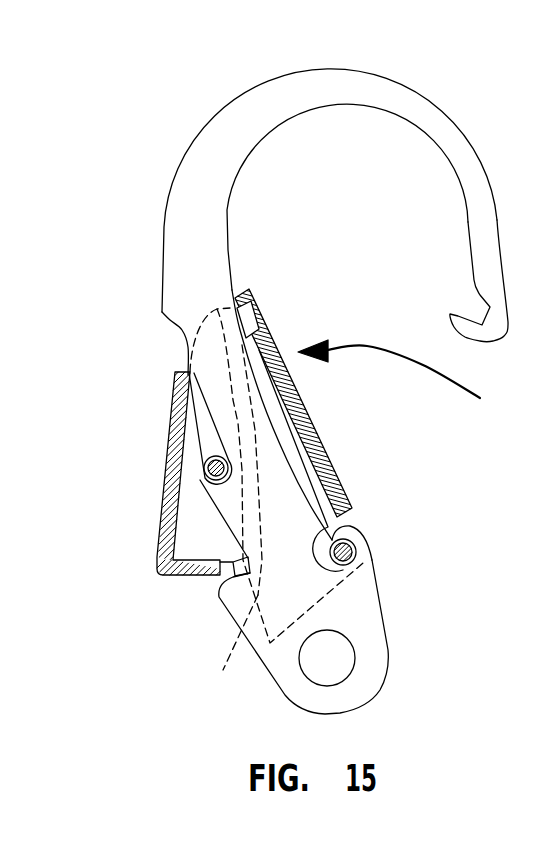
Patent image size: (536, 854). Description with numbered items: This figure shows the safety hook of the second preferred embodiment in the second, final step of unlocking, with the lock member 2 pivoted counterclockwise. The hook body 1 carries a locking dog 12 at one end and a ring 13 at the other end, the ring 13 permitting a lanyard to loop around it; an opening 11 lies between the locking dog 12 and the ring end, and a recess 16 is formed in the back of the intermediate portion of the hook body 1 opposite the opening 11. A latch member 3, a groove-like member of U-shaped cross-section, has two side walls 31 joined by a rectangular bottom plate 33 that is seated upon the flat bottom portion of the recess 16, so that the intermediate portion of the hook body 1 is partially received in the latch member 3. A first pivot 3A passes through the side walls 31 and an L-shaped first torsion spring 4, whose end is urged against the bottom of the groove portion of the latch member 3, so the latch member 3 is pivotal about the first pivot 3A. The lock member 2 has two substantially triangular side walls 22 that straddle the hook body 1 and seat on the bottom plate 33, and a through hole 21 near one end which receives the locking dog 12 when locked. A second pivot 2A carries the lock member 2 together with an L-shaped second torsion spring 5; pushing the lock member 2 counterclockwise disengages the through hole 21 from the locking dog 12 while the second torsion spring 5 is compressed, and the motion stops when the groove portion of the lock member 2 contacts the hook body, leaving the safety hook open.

The hook body 1 is at (197, 117).
The opening 11 is at (415, 455).
The locking dog 12 is at (450, 316).
The ring 13 is at (368, 670).
The recess 16 is at (165, 350).
The lock member 2 is at (297, 393).
The through hole 21 is at (249, 318).
The side walls 22 is at (223, 647).
The second pivot 2A is at (358, 556).
The latch member 3 is at (176, 501).
The side walls 31 is at (195, 538).
The bottom plate 33 is at (192, 581).
The first pivot 3A is at (205, 463).
The first torsion spring 4 is at (178, 432).
The second torsion spring 5 is at (325, 487).